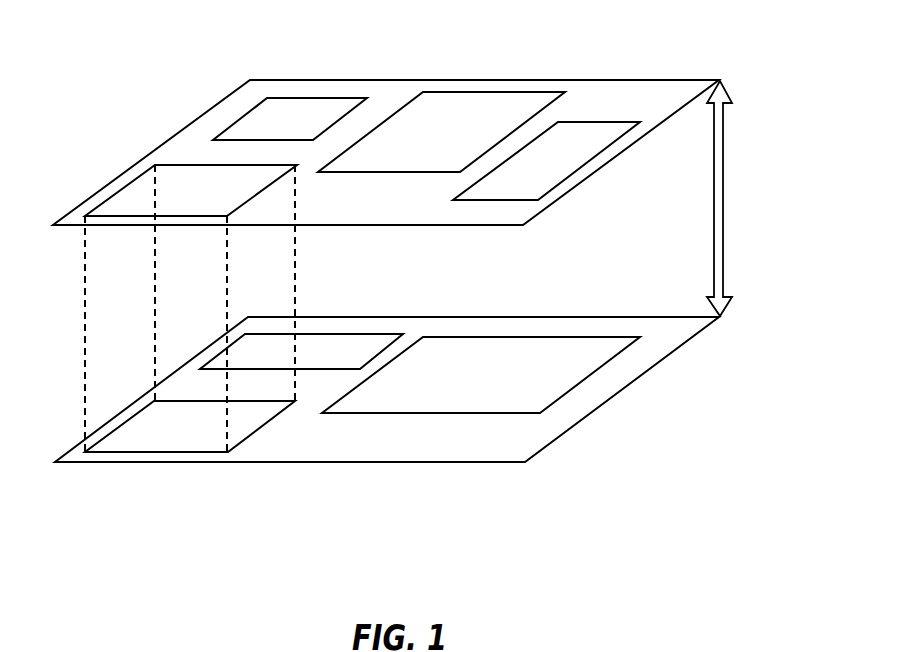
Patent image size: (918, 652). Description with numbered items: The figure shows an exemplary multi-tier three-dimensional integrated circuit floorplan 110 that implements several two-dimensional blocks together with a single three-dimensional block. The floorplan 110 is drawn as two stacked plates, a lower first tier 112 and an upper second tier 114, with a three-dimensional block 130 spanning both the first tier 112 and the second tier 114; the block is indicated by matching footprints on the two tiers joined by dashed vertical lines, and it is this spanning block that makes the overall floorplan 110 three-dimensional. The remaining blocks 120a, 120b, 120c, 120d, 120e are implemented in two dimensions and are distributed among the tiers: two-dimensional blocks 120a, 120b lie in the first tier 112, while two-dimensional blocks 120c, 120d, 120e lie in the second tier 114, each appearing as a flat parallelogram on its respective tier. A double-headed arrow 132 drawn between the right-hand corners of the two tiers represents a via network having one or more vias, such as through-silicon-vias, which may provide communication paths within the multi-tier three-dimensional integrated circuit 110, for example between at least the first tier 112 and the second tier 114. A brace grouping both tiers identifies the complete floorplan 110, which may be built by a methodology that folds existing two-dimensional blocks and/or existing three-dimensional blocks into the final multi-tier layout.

The multi-tier 3D IC floorplan 110 is at (787, 70).
The first tier 112 is at (592, 414).
The second tier 114 is at (580, 184).
The 2D block 120a is at (343, 333).
The 2D block 120b is at (522, 337).
The 2D block 120c is at (270, 98).
The 2D block 120d is at (428, 92).
The 2D block 120e is at (595, 122).
The 3D block 130 is at (83, 295).
The arrow 132 is at (727, 185).